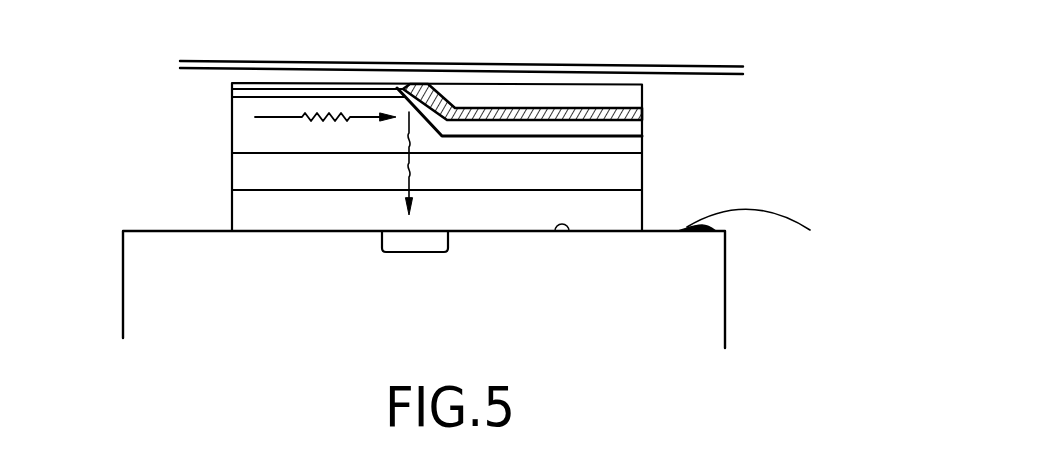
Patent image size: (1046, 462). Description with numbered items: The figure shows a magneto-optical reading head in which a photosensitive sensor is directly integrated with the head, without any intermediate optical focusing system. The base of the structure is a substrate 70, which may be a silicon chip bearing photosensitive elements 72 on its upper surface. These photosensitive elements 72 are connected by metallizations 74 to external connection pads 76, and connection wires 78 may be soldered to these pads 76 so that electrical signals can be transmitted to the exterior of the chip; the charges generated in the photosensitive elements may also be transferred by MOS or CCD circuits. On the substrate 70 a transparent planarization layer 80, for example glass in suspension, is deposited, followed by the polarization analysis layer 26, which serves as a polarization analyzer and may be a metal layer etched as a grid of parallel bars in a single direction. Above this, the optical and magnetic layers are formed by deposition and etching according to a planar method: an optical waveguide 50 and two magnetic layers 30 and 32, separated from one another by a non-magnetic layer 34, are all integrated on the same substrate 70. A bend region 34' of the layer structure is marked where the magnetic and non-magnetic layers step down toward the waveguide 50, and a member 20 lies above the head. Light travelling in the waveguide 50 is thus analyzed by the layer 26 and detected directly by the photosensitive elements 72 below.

The wafer / substrate above 20 is at (707, 67).
The polarization analysis layer 26 is at (235, 172).
The magnetic layer 30 is at (462, 107).
The magnetic layer 32 is at (548, 134).
The non-magnetic layer 34 is at (511, 70).
The bend of layer 34 34' is at (404, 111).
The optical waveguide 50 is at (292, 96).
The substrate 70 is at (138, 273).
The photosensitive elements 72 is at (413, 243).
The metallizations 74 is at (570, 233).
The external connection pads 76 is at (690, 237).
The connection wires 78 is at (773, 207).
The transparent planarization layer 80 is at (238, 206).